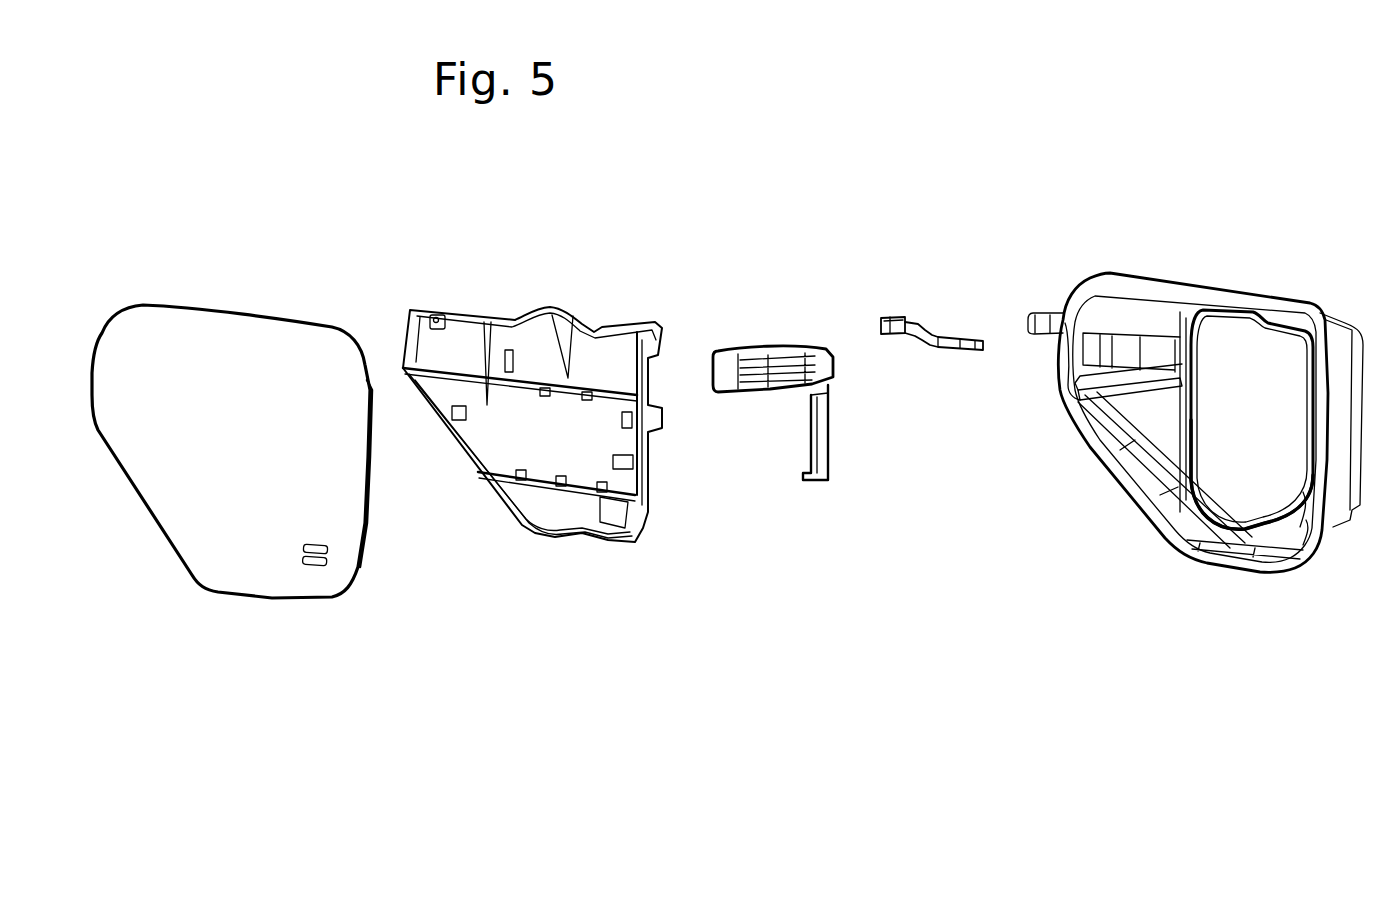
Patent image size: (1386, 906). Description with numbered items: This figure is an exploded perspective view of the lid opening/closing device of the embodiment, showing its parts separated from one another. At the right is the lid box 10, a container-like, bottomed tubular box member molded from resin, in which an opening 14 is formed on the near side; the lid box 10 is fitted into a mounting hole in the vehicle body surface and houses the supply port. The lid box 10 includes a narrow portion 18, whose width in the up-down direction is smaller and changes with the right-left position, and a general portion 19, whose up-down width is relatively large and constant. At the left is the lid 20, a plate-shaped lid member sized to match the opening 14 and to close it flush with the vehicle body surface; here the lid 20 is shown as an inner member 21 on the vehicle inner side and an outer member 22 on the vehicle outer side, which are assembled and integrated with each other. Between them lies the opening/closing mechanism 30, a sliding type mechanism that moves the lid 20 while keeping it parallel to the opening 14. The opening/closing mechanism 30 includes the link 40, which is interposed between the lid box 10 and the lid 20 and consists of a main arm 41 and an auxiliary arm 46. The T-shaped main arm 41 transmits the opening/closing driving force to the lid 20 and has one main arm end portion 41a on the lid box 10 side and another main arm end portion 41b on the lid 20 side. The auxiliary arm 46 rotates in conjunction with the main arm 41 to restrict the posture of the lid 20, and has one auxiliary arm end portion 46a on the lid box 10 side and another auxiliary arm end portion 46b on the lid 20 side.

The lid box 10 is at (1207, 507).
The opening 14 is at (1247, 553).
The narrow portion 18 is at (1117, 480).
The general portion 19 is at (1207, 547).
The lid 20 is at (532, 535).
The inner member 21 is at (535, 510).
The outer member 22 is at (235, 568).
The opening/closing mechanism 30 is at (869, 436).
The link 40 is at (869, 436).
The main arm 41 is at (827, 356).
The main arm end portion 41a is at (728, 347).
The main arm end portion 41b is at (830, 400).
The auxiliary arm 46 is at (956, 365).
The auxiliary arm end portion 46a is at (892, 317).
The auxiliary arm end portion 46b is at (977, 337).